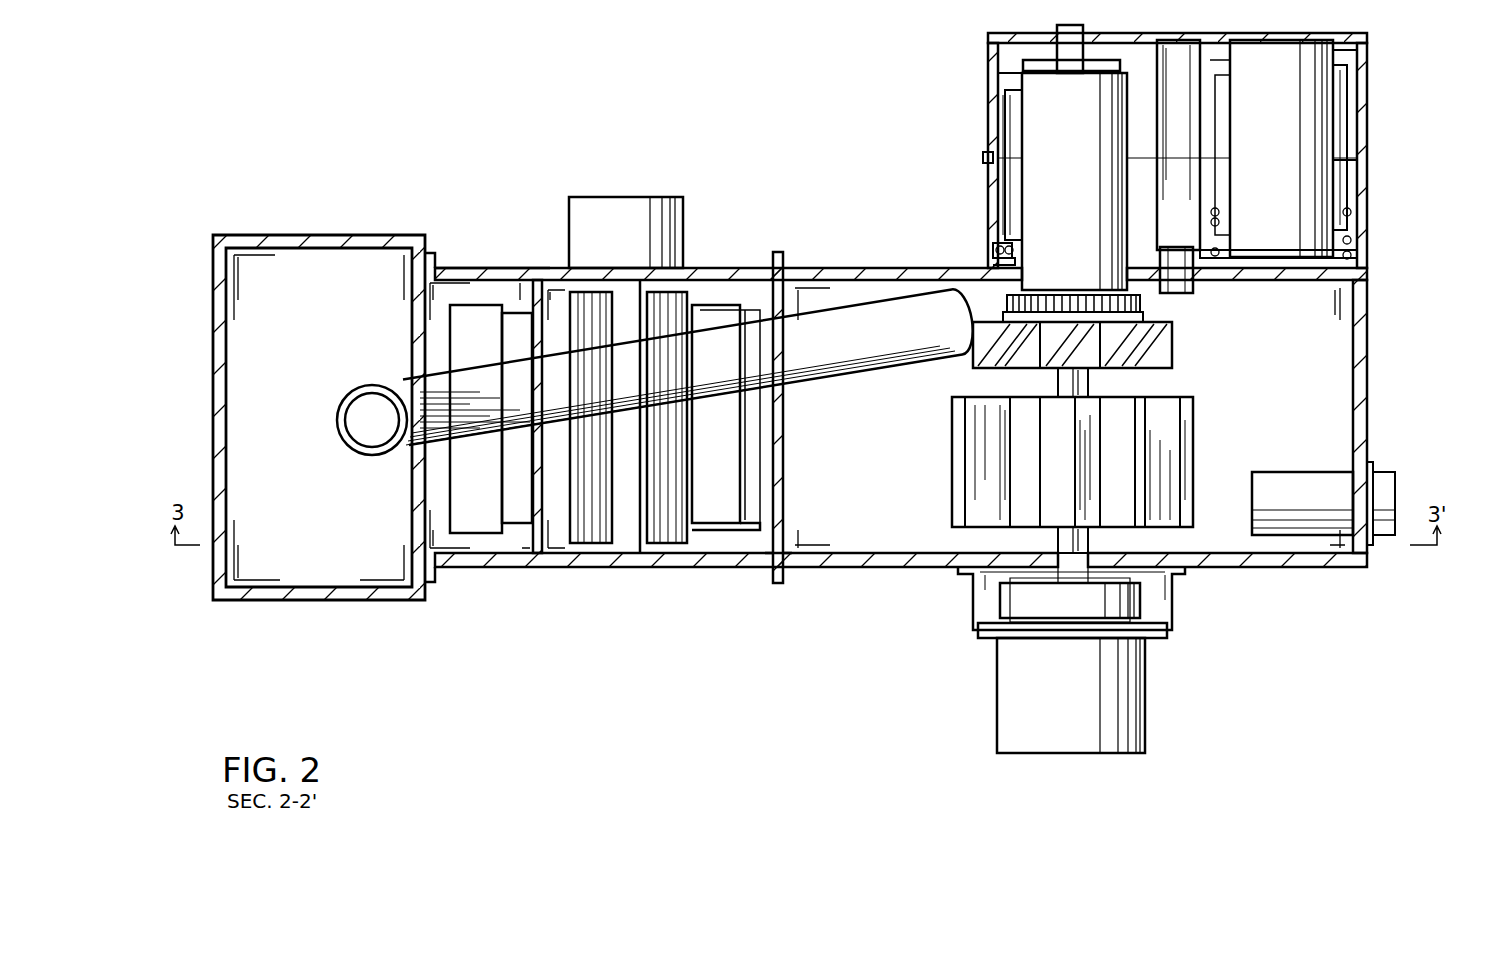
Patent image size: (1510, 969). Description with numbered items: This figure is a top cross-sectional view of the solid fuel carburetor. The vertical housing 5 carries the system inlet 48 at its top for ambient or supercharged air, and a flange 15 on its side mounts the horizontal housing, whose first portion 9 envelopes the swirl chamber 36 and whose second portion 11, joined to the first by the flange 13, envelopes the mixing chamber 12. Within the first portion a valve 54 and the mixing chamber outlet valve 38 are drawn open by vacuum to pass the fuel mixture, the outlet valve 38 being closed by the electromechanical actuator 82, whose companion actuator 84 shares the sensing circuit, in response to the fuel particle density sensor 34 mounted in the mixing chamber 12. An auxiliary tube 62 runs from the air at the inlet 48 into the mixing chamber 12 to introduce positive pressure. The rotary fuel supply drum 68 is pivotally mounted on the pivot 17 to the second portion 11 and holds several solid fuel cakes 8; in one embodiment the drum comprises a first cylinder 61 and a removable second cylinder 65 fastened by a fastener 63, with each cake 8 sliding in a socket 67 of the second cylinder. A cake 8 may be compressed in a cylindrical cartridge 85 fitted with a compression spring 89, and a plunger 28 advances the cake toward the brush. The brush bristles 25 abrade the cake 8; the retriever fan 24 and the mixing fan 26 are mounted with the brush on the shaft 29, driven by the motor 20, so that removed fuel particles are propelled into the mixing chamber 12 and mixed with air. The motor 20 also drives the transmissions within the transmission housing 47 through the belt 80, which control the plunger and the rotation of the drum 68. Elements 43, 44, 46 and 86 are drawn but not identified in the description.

The vertical housing 5 is at (213, 340).
The solid fuel cake 8 is at (1040, 95).
The first portion of horizontal housing 9 is at (700, 268).
The second portion of horizontal housing 11 is at (862, 268).
The mixing chamber 12 is at (847, 495).
The flange 13 is at (785, 583).
The flange 15 is at (436, 584).
The pivot 17 is at (1195, 290).
The motor 20 is at (1145, 707).
The retriever fan 24 is at (1172, 352).
The bristles 25 is at (1007, 302).
The mixing fan 26 is at (1196, 423).
The plunger 28 is at (1030, 62).
The shaft 29 is at (1090, 385).
The fuel particle density sensor 34 is at (1270, 475).
The swirl chamber 36 is at (771, 273).
The mixing chamber outlet valve 38 is at (707, 530).
The partition 43 is at (537, 567).
The coil assembly 44 is at (588, 545).
The block 46 is at (683, 200).
The transmission housing 47 is at (965, 585).
The system inlet 48 is at (294, 307).
The valve 54 is at (476, 305).
The first cylinder 61 is at (985, 258).
The auxiliary tube 62 is at (376, 386).
The fastener 63 is at (983, 158).
The second cylinder 65 is at (1367, 65).
The socket 67 is at (1000, 210).
The rotary fuel supply drum 68 is at (1350, 160).
The belt 80 is at (1145, 603).
The electromechanical actuator 82 is at (755, 525).
The actuator 84 is at (515, 313).
The cylindrical cartridge 85 is at (1012, 128).
The lower housing 86 is at (985, 620).
The spring 89 is at (995, 245).